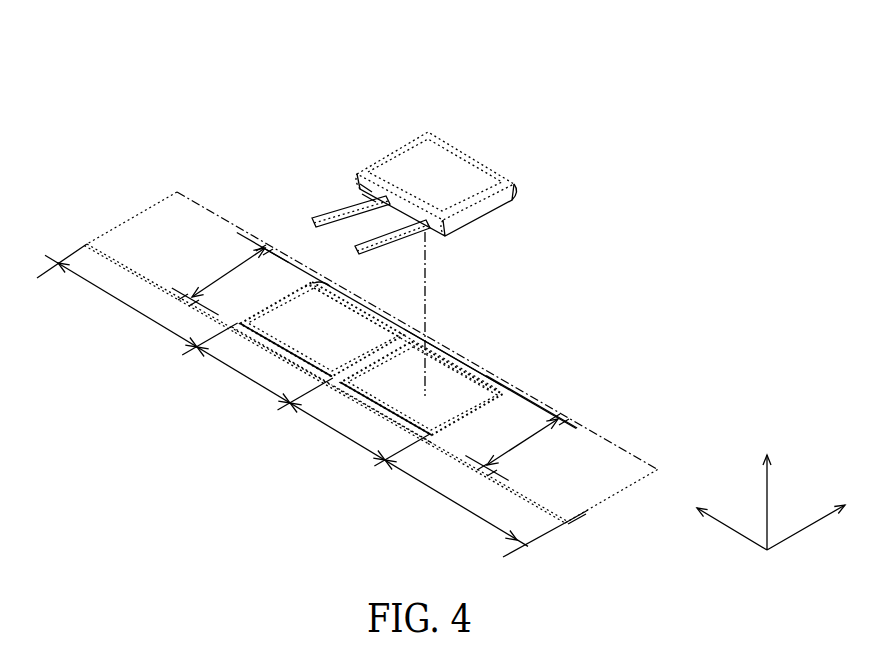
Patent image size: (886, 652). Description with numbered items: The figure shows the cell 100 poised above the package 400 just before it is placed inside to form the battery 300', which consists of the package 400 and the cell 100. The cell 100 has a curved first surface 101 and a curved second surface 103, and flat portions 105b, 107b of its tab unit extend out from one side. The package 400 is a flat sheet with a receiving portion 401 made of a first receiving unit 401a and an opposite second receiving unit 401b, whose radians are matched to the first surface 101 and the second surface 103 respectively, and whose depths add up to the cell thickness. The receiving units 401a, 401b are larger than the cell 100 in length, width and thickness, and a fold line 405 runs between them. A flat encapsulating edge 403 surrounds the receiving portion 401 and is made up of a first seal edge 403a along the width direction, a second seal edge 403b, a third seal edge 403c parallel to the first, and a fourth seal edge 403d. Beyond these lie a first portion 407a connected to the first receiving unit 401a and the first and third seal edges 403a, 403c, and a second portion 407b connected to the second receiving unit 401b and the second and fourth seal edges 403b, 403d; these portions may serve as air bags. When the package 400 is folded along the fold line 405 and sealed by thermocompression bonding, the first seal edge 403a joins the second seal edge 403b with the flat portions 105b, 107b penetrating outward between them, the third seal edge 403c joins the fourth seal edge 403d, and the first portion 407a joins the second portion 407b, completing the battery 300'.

The battery 300' is at (441, 284).
The cell 100 is at (457, 136).
The first surface 101 is at (363, 191).
The second surface 103 is at (470, 172).
The flat portion 105b is at (322, 220).
The flat portion 107b is at (382, 240).
The package 400 is at (573, 352).
The receiving portion 401 is at (301, 319).
The first receiving unit 401a is at (406, 412).
The second receiving unit 401b is at (350, 325).
The flat encapsulating edge 403 is at (486, 377).
The first seal edge 403a is at (358, 402).
The second seal edge 403b is at (247, 330).
The third seal edge 403c is at (458, 353).
The fourth seal edge 403d is at (337, 284).
The fold line 405 is at (427, 319).
The first portion 407a is at (537, 490).
The second portion 407b is at (137, 262).